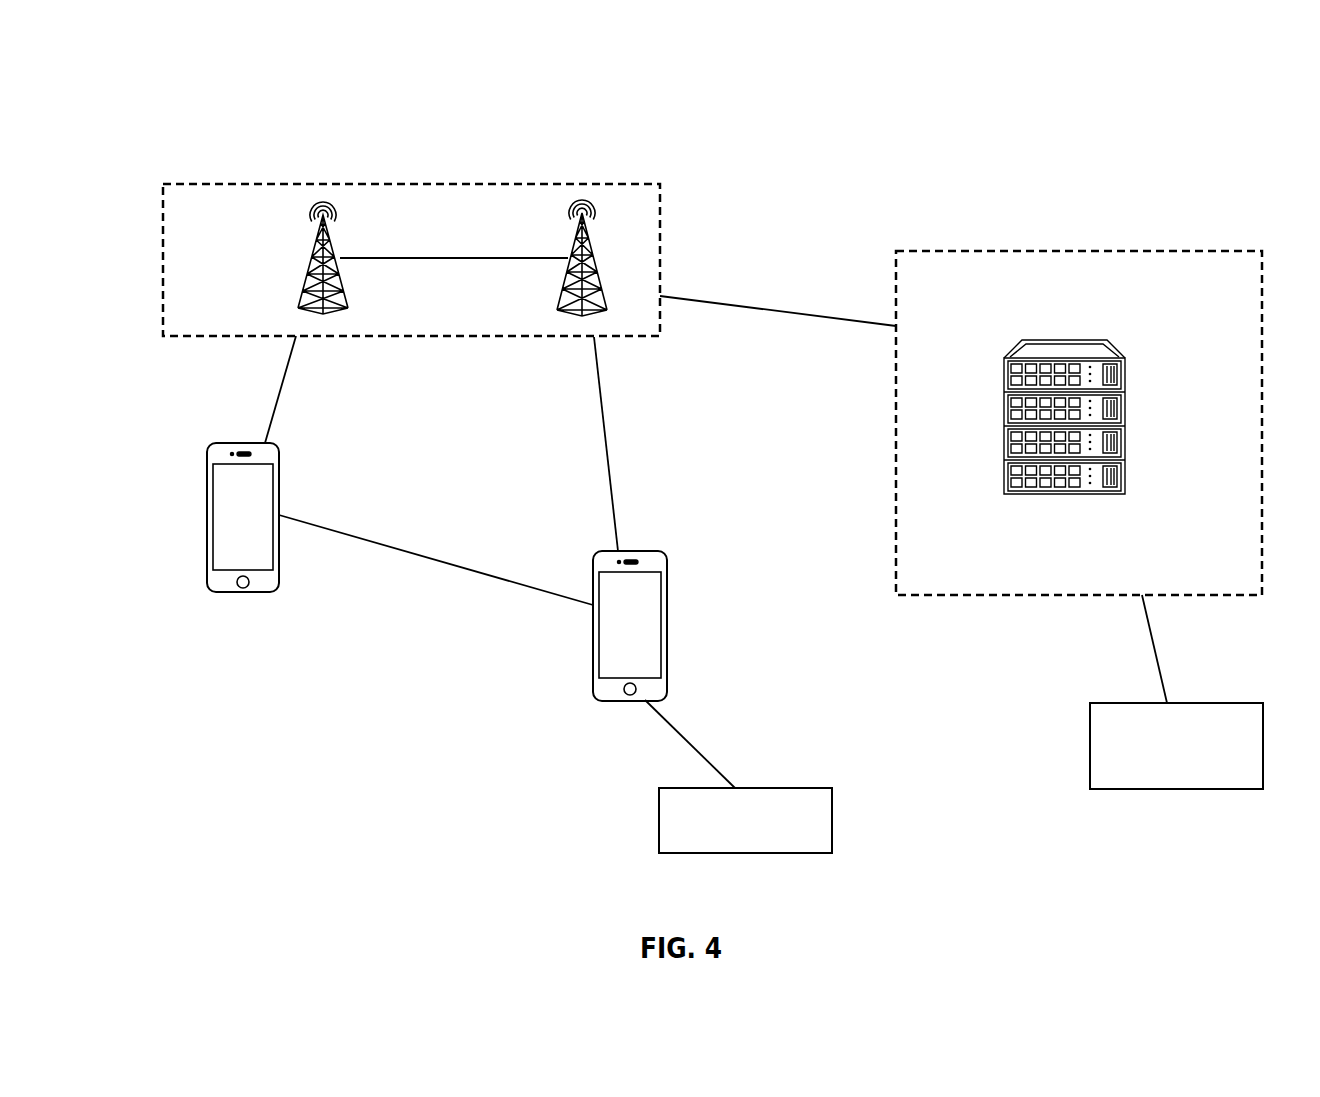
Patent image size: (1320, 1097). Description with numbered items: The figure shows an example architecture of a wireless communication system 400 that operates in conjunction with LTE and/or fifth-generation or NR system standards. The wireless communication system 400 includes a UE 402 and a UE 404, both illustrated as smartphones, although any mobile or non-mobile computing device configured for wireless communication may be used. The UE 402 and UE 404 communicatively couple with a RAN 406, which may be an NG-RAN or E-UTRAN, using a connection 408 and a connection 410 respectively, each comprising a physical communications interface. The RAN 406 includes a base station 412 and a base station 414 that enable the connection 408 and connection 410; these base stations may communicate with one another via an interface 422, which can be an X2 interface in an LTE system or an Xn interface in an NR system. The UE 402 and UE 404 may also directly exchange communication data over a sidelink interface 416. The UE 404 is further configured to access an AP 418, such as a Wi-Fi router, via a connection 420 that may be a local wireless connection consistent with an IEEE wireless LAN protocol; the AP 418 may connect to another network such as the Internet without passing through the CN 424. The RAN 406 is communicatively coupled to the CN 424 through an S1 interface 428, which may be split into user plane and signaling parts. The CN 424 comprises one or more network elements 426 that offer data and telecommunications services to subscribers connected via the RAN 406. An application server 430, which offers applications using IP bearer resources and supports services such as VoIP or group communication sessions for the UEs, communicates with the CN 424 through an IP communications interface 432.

The wireless communication system 400 is at (1172, 99).
The UE 402 is at (207, 472).
The UE 404 is at (667, 587).
The RAN 406 is at (413, 184).
The connection 408 is at (283, 377).
The connection 410 is at (604, 425).
The base station 412 is at (320, 225).
The base station 414 is at (578, 225).
The sidelink interface 416 is at (432, 555).
The AP 418 is at (659, 836).
The connection 420 is at (675, 735).
The interface 422 is at (405, 258).
The CN 424 is at (1082, 251).
The network elements 426 is at (1129, 378).
The S1 interface 428 is at (745, 306).
The application server 430 is at (1090, 725).
The IP communications interface 432 is at (1158, 662).